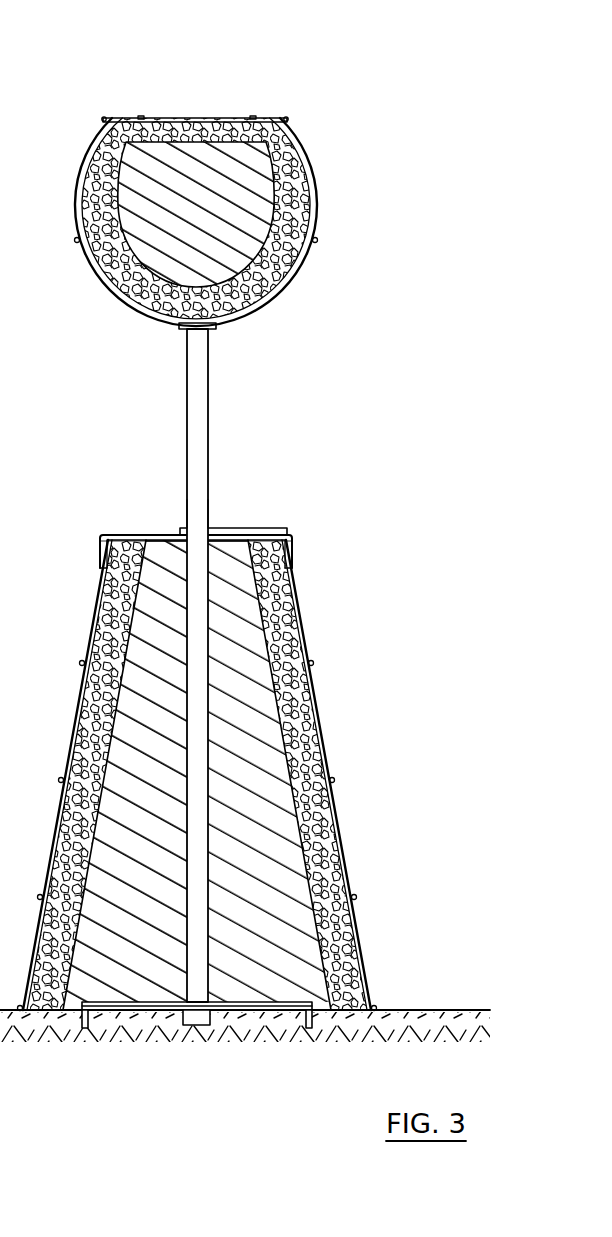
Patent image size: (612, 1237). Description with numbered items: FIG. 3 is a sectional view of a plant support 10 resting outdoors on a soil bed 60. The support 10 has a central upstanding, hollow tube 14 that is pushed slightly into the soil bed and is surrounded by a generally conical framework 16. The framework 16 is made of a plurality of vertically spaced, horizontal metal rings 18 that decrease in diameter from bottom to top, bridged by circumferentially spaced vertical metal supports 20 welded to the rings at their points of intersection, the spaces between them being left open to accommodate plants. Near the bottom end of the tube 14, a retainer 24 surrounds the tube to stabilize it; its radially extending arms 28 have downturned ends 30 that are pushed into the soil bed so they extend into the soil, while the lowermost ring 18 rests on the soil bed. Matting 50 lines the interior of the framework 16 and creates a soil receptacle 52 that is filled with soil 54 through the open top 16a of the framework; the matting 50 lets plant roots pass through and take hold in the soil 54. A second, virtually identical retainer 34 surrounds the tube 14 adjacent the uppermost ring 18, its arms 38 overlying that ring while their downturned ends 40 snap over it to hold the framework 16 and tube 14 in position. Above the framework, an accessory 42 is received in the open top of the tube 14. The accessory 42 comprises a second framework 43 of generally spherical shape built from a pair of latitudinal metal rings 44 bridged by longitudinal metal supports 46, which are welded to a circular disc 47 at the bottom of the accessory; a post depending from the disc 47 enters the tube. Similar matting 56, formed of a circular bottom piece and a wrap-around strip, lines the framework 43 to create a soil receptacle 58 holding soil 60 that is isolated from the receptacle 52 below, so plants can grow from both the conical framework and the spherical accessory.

The support 10 is at (245, 548).
The hollow tube 14 is at (208, 420).
The framework 16 is at (209, 765).
The open top of the framework 16a is at (170, 523).
The horizontal metal rings 18 is at (306, 661).
The vertical metal supports 20 is at (84, 706).
The retainer 24 is at (140, 980).
The arms 28 is at (262, 1002).
The downturned ends 30 is at (84, 1026).
The second retainer 34 is at (312, 536).
The arms 38 is at (100, 534).
The downturned ends 40 is at (293, 556).
The accessory 42 is at (203, 189).
The second framework 43 is at (117, 108).
The latitudinal metal rings 44 is at (183, 119).
The longitudinal metal supports 46 is at (90, 157).
The circular disc 47 is at (217, 326).
The matting 50 is at (325, 832).
The soil receptacle 52 is at (238, 495).
The soil 54 is at (262, 730).
The matting 56 is at (305, 173).
The soil receptacle 58 is at (245, 105).
The soil 60 is at (150, 247).